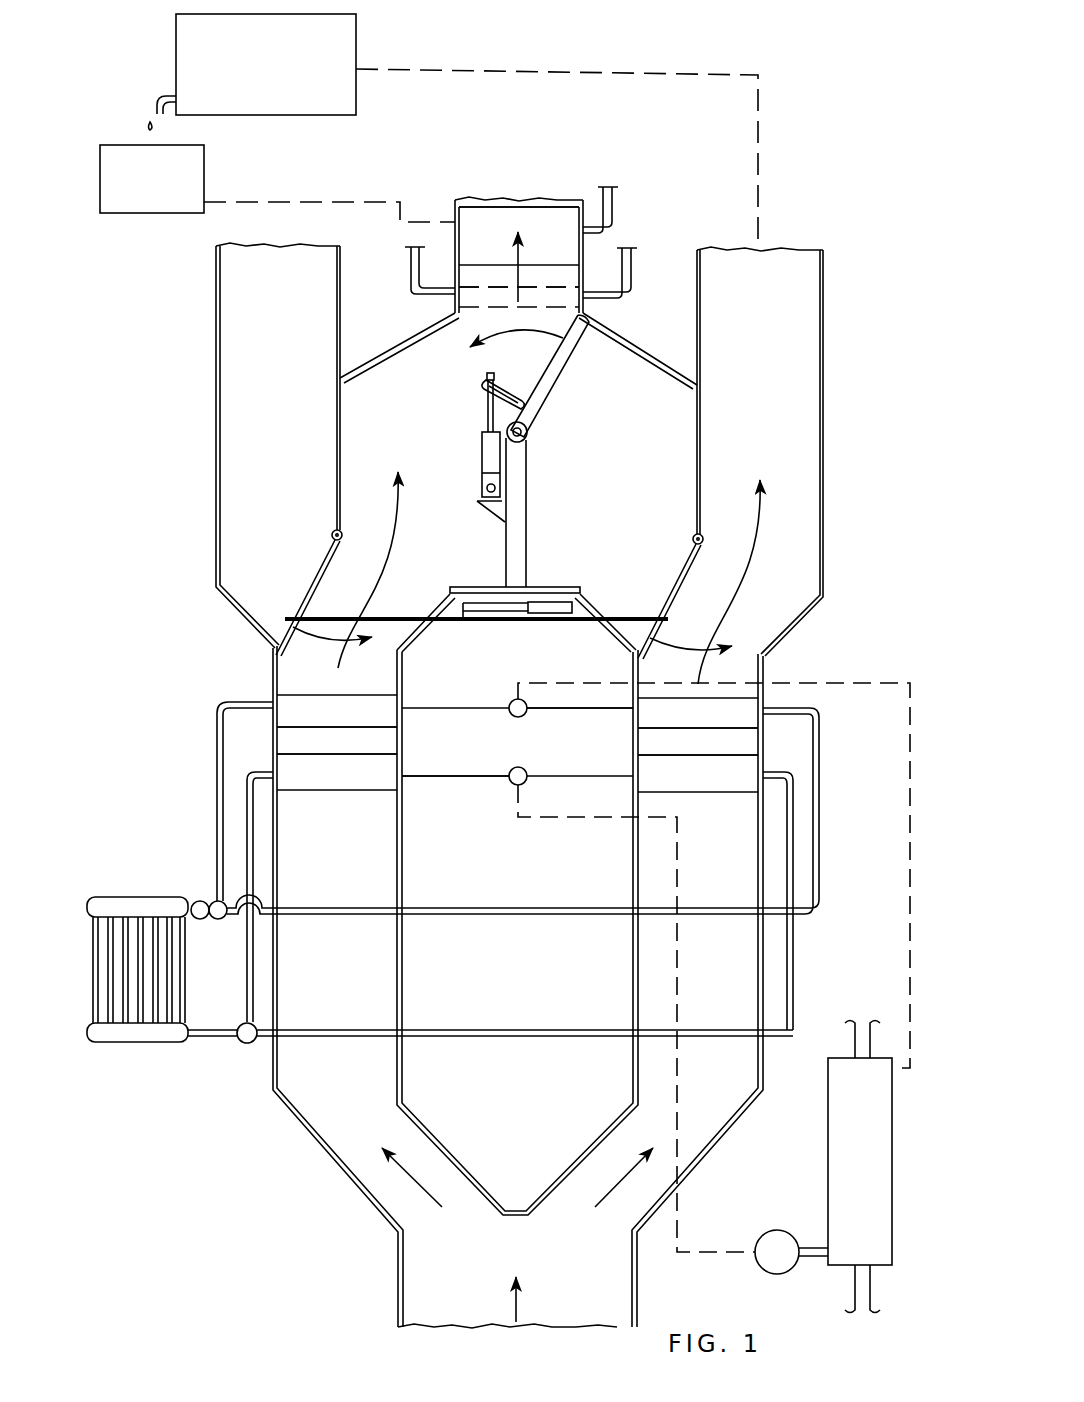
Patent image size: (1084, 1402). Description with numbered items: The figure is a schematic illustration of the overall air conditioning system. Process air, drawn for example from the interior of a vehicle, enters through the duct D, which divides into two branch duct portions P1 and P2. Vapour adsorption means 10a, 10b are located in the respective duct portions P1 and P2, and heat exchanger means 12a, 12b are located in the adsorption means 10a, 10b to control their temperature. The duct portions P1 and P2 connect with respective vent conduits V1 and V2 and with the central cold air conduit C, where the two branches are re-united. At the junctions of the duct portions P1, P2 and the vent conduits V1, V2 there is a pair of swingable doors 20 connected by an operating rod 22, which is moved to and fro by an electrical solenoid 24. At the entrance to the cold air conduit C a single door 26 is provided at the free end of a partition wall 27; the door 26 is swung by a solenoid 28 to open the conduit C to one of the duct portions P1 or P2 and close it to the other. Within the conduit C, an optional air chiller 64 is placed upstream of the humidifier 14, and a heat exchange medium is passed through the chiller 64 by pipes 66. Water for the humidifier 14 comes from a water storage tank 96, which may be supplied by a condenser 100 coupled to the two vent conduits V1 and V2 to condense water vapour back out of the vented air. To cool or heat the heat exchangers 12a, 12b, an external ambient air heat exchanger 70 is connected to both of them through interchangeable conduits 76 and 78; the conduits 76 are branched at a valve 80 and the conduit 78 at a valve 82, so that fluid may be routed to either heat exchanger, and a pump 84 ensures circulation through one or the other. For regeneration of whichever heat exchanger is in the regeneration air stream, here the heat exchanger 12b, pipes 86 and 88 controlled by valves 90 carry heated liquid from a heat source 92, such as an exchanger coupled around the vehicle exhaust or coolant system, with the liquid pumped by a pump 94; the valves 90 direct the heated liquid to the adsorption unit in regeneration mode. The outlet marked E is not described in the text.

The condenser 100 is at (357, 49).
The water storage tank 96 is at (150, 197).
The cold air conduit C is at (455, 210).
The humidifier 14 is at (545, 222).
The air chiller 64 is at (459, 300).
The pipes 66 is at (411, 286).
The door 26 is at (557, 386).
The solenoid 28 is at (482, 458).
The partition wall 27 is at (512, 548).
The operating rod 22 is at (525, 624).
The electrical solenoid 24 is at (548, 602).
The swingable doors 20 is at (312, 583).
The vent conduit V1 is at (215, 403).
The vent conduit V2 is at (838, 290).
The vapour adsorption means 10a is at (310, 709).
The vapour adsorption means 10b is at (730, 708).
The heat exchanger means 12a is at (330, 738).
The heat exchanger means 12b is at (696, 740).
The duct portion P1 is at (318, 1150).
The duct portion P2 is at (700, 1164).
The duct D is at (398, 1279).
The valves 90 is at (512, 700).
The pipe 86 is at (530, 712).
The pipe 88 is at (448, 780).
The conduits 76 is at (216, 810).
The conduit 78 is at (345, 1030).
The external ambient air heat exchanger 70 is at (124, 1060).
The pump 84 is at (198, 900).
The valve 80 is at (218, 920).
The valve 82 is at (245, 1044).
The heat source 92 is at (845, 1170).
The outlet E is at (850, 1045).
The pump 94 is at (795, 1270).